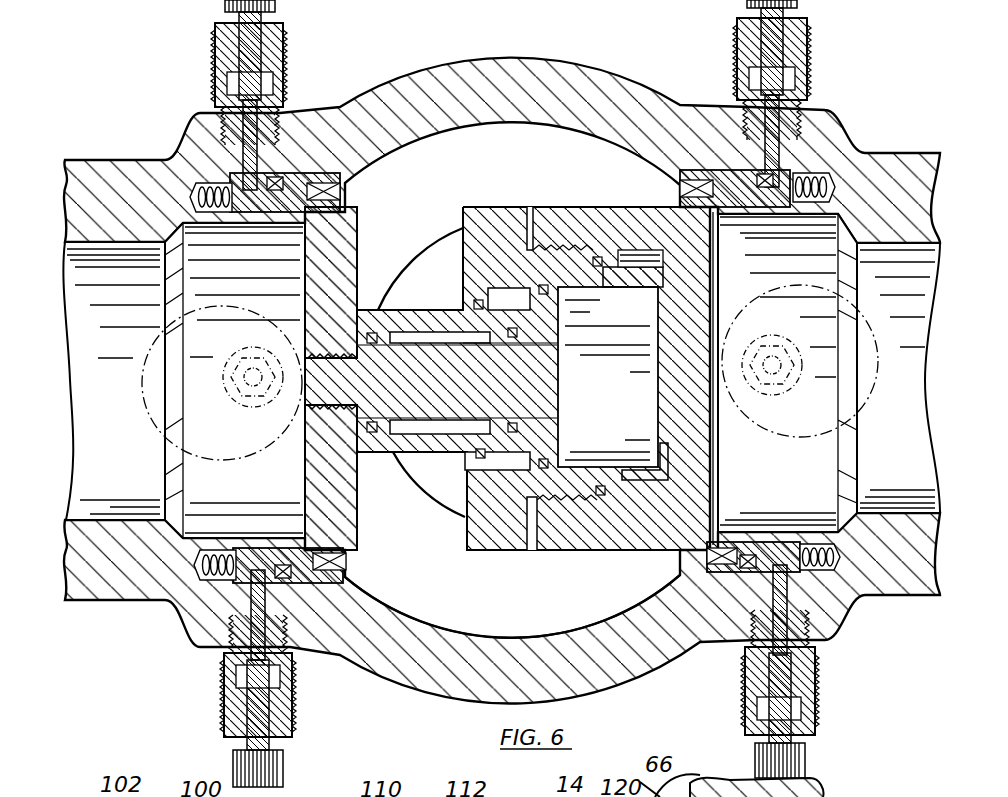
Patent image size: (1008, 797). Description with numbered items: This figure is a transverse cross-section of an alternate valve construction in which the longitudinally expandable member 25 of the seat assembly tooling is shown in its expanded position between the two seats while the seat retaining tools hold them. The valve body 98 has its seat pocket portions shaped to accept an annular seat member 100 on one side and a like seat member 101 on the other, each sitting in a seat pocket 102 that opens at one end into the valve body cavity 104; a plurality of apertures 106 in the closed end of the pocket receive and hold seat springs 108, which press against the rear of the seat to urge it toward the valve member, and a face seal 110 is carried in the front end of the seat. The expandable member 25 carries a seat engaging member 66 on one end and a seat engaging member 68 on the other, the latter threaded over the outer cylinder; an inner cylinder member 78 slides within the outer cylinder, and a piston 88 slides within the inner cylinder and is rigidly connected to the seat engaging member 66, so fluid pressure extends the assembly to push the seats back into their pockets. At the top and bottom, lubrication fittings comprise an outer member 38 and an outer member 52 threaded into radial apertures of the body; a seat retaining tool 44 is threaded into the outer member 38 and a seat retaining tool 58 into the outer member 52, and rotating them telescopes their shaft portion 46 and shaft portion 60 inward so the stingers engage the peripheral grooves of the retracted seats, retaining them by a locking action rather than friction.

The longitudinally expandable member 25 is at (509, 347).
The outer member 38 is at (215, 75).
The seat retaining tool 44 is at (240, 55).
The shaft portion 46 is at (246, 150).
The outer member 52 is at (800, 60).
The seat retaining tool 58 is at (770, 26).
The shaft portion 60 is at (775, 150).
The seat engaging member 66 is at (340, 222).
The seat engaging member 68 is at (683, 309).
The inner cylinder member 78 is at (381, 309).
The piston 88 is at (540, 387).
The valve body 98 is at (400, 683).
The seat member 100 is at (290, 548).
The seat member 101 is at (746, 545).
The seat pocket 102 is at (340, 574).
The valve body cavity 104 is at (540, 601).
The apertures 106 is at (255, 553).
The seat springs 108 is at (207, 552).
The face seal 110 is at (345, 563).